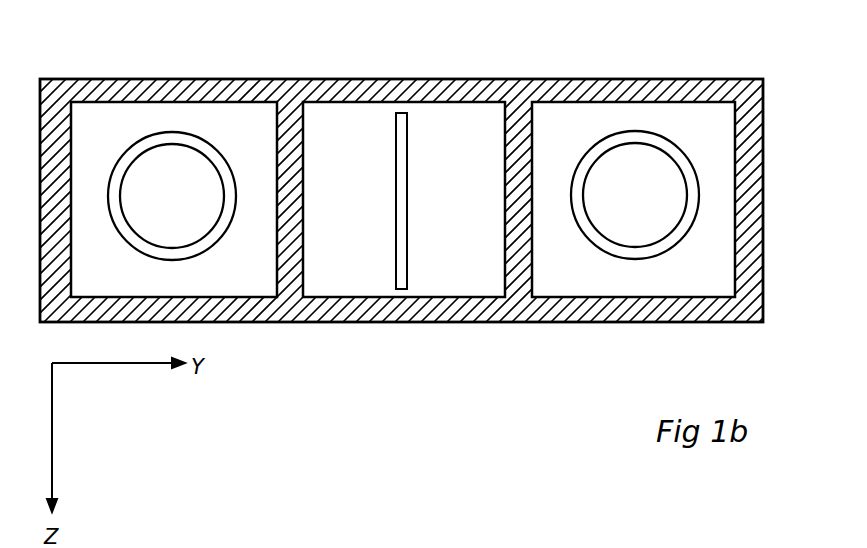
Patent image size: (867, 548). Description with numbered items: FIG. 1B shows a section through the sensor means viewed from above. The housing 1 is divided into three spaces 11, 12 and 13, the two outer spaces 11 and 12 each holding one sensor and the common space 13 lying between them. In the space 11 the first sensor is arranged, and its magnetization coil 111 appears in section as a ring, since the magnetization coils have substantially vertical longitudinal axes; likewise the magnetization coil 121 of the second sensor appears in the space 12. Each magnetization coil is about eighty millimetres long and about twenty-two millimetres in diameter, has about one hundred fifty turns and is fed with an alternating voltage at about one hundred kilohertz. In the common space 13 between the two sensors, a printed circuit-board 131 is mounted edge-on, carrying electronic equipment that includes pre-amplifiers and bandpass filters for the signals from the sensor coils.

The housing 1 is at (765, 184).
The space 11 is at (223, 118).
The magnetization coil 111 is at (187, 225).
The space 12 is at (690, 115).
The magnetization coil 121 is at (658, 227).
The common space 13 is at (442, 122).
The printed circuit-board 131 is at (408, 195).